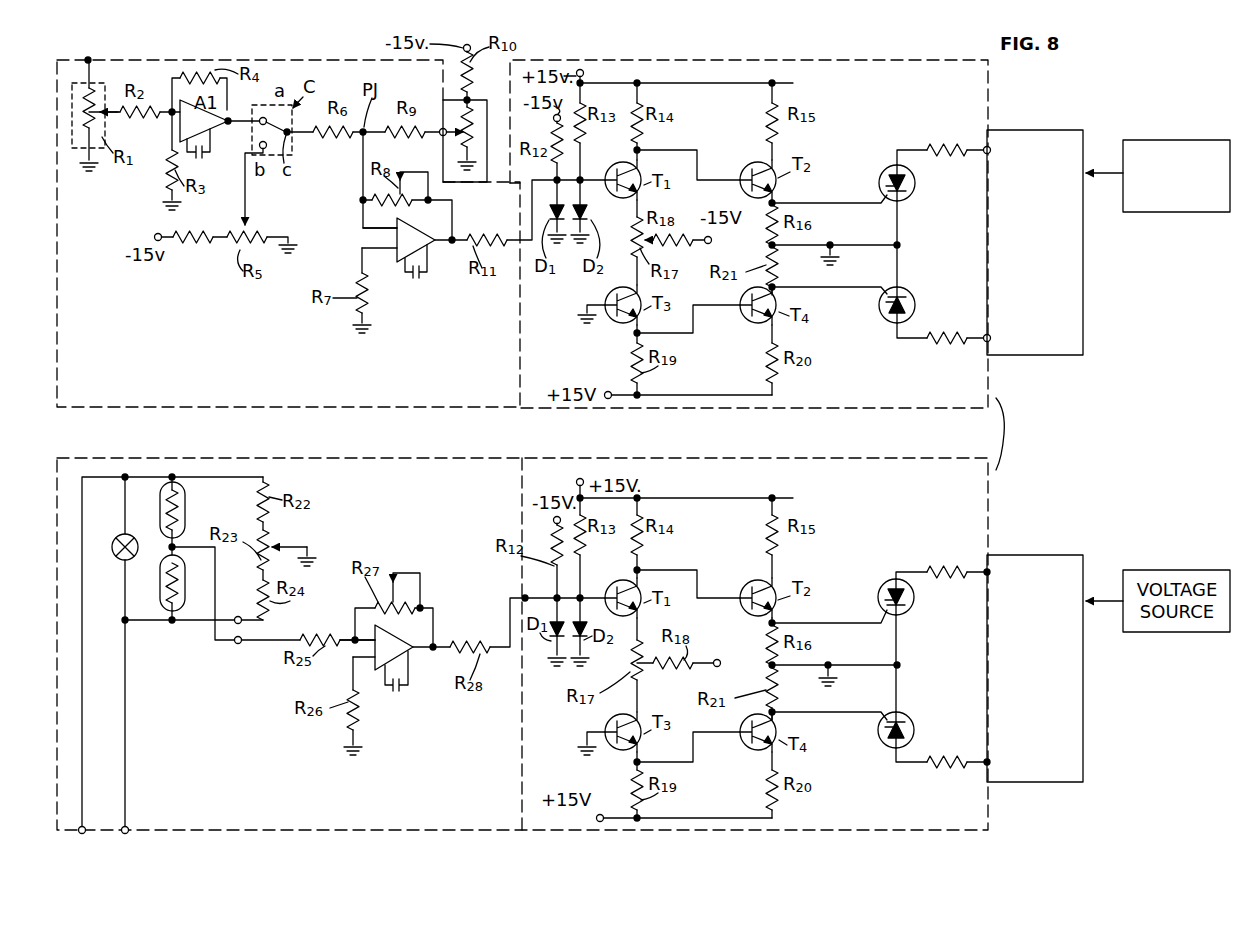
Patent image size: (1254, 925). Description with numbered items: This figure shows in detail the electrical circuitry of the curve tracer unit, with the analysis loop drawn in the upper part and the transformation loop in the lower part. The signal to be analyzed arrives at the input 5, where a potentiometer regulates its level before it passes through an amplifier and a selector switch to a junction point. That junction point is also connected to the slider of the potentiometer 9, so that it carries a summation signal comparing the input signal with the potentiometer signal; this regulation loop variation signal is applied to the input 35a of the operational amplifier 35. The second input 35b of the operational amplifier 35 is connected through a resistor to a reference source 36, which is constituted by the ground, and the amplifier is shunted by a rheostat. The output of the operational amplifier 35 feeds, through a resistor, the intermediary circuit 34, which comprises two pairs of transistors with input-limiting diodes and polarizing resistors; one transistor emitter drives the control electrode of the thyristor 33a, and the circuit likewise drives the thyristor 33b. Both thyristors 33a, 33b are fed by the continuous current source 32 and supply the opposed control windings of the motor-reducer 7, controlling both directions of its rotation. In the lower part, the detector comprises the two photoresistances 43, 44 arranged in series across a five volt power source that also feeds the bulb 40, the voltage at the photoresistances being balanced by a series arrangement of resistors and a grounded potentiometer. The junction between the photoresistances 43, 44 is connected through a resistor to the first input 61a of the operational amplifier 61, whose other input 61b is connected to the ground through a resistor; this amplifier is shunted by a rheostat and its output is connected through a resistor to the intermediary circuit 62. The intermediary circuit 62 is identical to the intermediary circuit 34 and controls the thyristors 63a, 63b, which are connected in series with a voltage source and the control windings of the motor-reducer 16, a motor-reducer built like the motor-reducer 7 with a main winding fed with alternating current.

The input 5 is at (90, 58).
The motor-reducer 7 is at (1022, 126).
The potentiometer 9 is at (488, 116).
The motor-reducer 16 is at (1090, 759).
The continuous current source 32 is at (1158, 140).
The thyristor 33a is at (906, 197).
The thyristor 33b is at (908, 295).
The intermediary circuit 34 is at (702, 64).
The operational amplifier 35 is at (402, 256).
The input 35a is at (360, 226).
The second input 35b is at (362, 247).
The reference source 36 is at (350, 322).
The bulb 40 is at (113, 546).
The photoresistance 43 is at (183, 525).
The photoresistance 44 is at (168, 606).
The operational amplifier 61 is at (395, 645).
The first input 61a is at (355, 637).
The input 61b is at (367, 660).
The intermediary circuit 62 is at (520, 522).
The thyristor 63a is at (911, 601).
The thyristor 63b is at (912, 729).